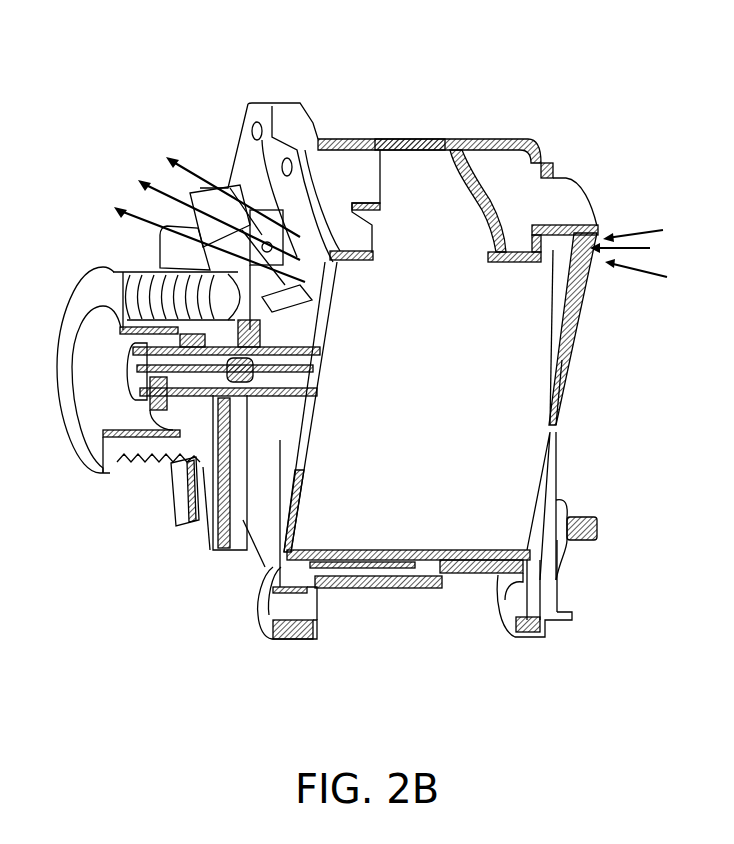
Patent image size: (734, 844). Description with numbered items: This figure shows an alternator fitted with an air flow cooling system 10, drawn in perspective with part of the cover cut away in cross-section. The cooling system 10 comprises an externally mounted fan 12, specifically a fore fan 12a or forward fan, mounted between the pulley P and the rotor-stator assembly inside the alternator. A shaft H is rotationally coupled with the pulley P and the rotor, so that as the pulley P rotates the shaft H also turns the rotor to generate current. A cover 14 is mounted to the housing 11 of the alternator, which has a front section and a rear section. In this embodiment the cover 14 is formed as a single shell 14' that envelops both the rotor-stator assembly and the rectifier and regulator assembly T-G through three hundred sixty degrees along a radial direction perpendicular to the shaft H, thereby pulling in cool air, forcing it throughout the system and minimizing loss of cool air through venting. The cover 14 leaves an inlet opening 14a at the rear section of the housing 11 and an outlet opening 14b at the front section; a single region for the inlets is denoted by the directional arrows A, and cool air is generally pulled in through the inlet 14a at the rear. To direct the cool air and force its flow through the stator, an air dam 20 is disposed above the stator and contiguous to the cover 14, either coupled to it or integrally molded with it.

The cooling system 10 is at (576, 92).
The housing 11 is at (376, 145).
The cover 14 is at (427, 347).
The single shell 14' is at (518, 415).
The inlet opening 14a is at (597, 240).
The outlet opening 14b is at (300, 257).
The air dam 20 is at (500, 193).
The fan 12 is at (182, 500).
The fore fan 12a is at (225, 472).
The pulley P is at (74, 310).
The shaft H is at (127, 377).
The directional arrow A is at (389, 217).
The rectifier and regulator assembly T-G is at (560, 428).